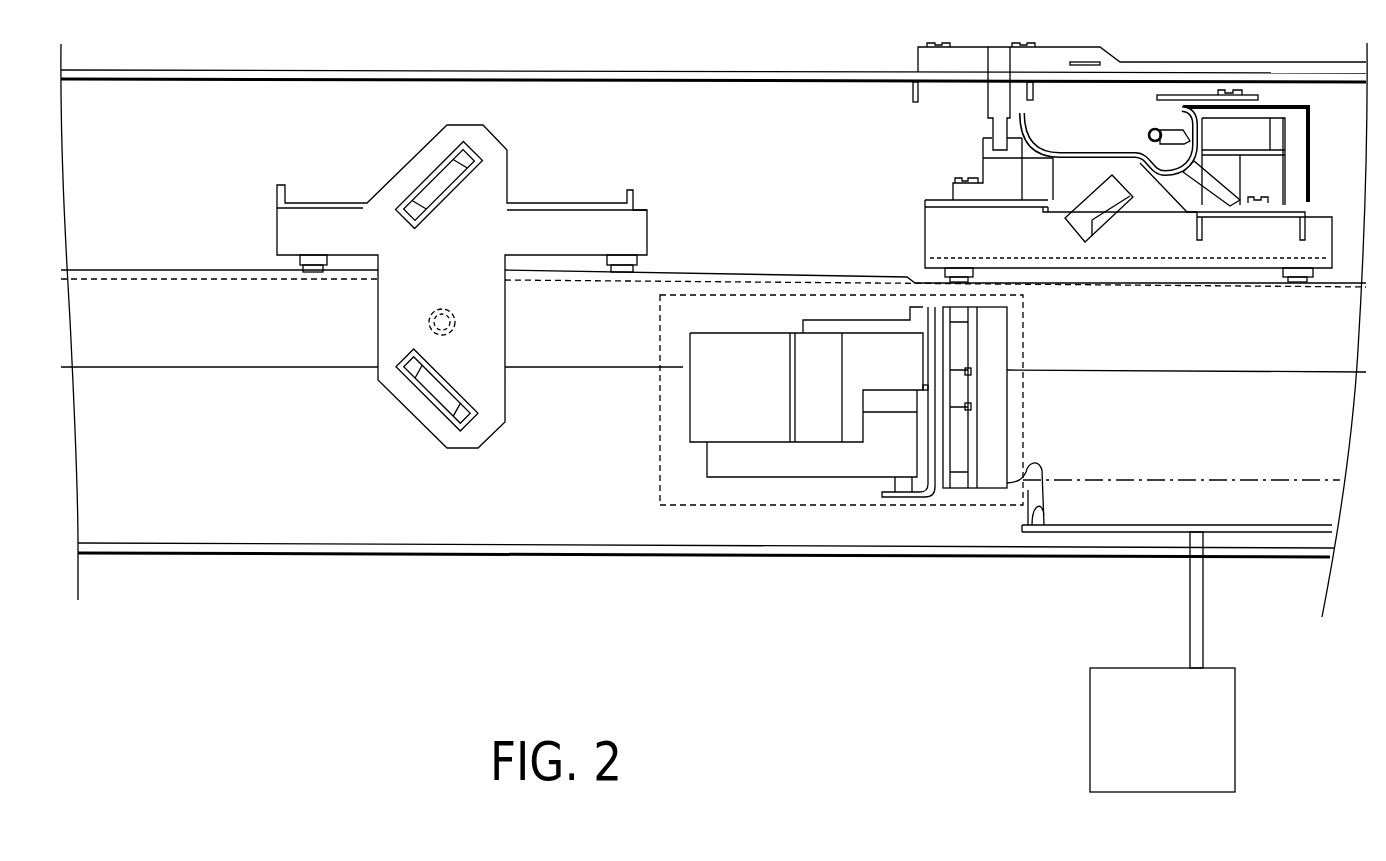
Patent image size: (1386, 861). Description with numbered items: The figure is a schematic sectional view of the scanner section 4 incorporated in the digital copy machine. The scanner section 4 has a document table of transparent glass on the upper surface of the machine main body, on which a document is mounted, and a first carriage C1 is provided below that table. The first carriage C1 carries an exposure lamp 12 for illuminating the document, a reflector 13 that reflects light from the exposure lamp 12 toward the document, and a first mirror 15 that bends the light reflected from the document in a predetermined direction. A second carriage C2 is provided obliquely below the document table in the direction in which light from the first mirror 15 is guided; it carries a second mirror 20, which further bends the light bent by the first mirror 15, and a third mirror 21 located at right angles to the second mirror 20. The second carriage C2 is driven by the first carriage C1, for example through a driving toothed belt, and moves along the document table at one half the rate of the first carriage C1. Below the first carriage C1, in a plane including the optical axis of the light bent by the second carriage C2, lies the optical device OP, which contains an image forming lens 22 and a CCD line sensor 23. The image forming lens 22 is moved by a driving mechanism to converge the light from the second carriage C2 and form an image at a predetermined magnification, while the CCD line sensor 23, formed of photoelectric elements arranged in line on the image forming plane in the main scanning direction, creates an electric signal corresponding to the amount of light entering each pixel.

The scanner section 4 is at (247, 557).
The exposure lamp 12 is at (1150, 128).
The reflector 13 is at (1140, 152).
The first mirror 15 is at (1067, 223).
The second mirror 20 is at (437, 183).
The third mirror 21 is at (465, 415).
The image forming lens 22 is at (697, 398).
The CCD line sensor 23 is at (993, 480).
The first carriage C1 is at (1139, 162).
The second carriage C2 is at (462, 293).
The optical device OP is at (660, 488).